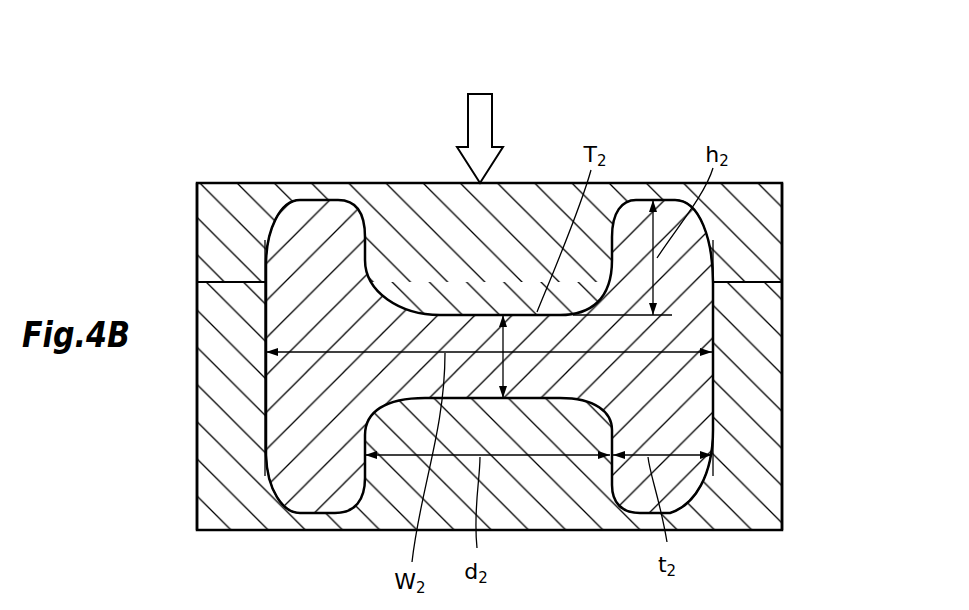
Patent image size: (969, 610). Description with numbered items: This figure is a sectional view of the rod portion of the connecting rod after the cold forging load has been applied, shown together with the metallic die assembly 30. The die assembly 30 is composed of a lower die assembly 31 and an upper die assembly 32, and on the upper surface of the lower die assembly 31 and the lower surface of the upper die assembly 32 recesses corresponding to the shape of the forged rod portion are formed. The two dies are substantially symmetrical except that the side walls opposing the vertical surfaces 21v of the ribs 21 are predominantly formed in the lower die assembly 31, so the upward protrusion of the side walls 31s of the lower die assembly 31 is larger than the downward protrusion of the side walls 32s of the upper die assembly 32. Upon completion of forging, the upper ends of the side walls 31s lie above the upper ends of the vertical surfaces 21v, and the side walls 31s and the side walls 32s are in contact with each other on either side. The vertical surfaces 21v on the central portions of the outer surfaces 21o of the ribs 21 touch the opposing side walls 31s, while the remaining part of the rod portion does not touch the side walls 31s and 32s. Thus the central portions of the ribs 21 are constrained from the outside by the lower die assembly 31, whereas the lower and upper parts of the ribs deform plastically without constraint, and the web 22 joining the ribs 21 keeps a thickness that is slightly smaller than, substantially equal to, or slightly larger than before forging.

The metallic die assembly 30 is at (146, 201).
The lower die assembly 31 is at (550, 520).
The upper die assembly 32 is at (543, 190).
The side walls of the lower die assembly 31s is at (210, 497).
The side walls of the upper die assembly 32s is at (200, 233).
The ribs 21 is at (330, 215).
The outer surfaces of the ribs 21o is at (270, 250).
The vertical surfaces 21v is at (262, 376).
The web 22 is at (443, 322).